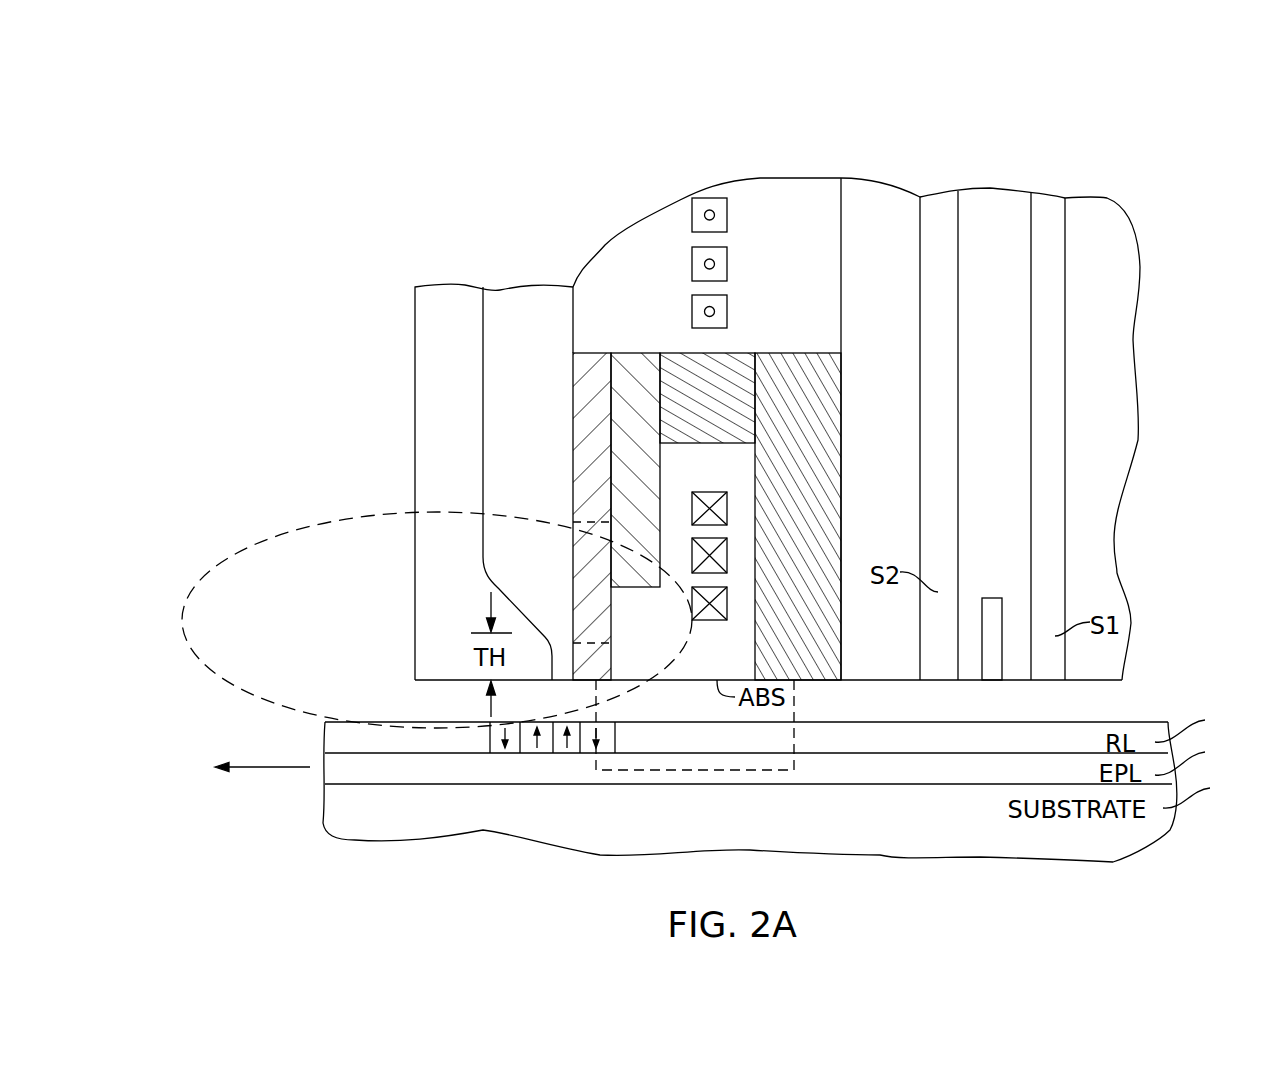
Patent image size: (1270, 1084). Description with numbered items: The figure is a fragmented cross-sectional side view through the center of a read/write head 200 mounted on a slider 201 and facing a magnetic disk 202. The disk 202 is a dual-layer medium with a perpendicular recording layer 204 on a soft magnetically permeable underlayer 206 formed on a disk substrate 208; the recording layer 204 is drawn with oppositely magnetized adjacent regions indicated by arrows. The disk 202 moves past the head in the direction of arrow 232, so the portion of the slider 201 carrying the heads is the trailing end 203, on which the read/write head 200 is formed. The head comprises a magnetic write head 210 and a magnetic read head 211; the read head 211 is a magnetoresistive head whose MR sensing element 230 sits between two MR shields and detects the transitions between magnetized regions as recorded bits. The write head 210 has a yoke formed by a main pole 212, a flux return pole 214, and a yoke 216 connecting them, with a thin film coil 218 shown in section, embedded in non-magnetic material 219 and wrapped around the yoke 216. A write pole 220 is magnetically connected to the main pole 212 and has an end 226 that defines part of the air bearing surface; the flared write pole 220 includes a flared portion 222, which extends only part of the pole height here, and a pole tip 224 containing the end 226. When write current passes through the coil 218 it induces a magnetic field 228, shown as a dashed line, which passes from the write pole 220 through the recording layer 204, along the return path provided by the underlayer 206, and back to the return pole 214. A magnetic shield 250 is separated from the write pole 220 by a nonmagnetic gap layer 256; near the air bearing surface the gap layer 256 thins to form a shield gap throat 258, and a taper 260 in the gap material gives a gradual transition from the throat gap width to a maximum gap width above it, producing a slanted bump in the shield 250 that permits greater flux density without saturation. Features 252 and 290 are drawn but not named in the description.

The read/write head 200 is at (345, 126).
The slider 201 is at (1120, 437).
The magnetic disk 202 is at (1172, 855).
The trailing end 203 is at (344, 475).
The recording layer 204 is at (788, 728).
The underlayer 206 is at (789, 760).
The disk substrate 208 is at (806, 792).
The magnetic write head 210 is at (415, 176).
The magnetic read head 211 is at (1068, 177).
The main pole 212 is at (655, 478).
The flux return pole 214 is at (841, 478).
The yoke 216 is at (747, 352).
The thin film coil 218 is at (740, 198).
The non-magnetic material 219 is at (660, 286).
The write pole 220 is at (605, 352).
The flared portion 222 is at (600, 625).
The pole tip 224 is at (600, 663).
The end 226 is at (603, 680).
The magnetic field 228 is at (795, 703).
The MR sensing element 230 is at (993, 680).
The arrow 232 is at (268, 767).
The magnetic shield 250 is at (447, 652).
The shield bottom edge 252 is at (538, 663).
The nonmagnetic gap layer 256 is at (530, 326).
The shield gap throat 258 is at (560, 620).
The taper 260 is at (506, 614).
The region of interest 290 is at (275, 533).